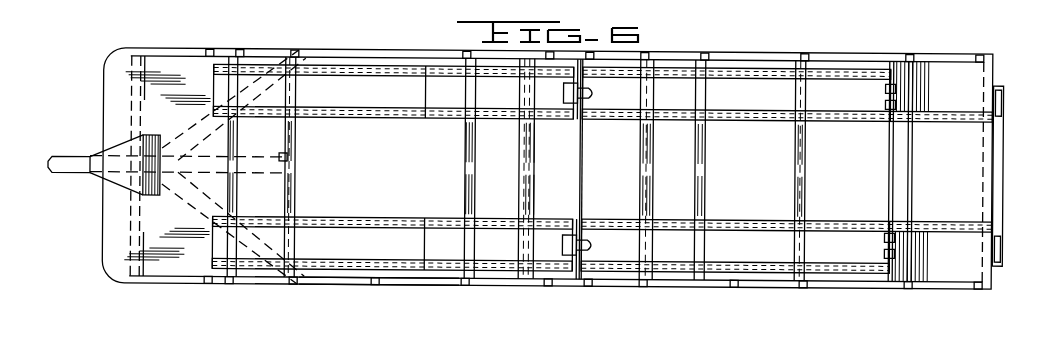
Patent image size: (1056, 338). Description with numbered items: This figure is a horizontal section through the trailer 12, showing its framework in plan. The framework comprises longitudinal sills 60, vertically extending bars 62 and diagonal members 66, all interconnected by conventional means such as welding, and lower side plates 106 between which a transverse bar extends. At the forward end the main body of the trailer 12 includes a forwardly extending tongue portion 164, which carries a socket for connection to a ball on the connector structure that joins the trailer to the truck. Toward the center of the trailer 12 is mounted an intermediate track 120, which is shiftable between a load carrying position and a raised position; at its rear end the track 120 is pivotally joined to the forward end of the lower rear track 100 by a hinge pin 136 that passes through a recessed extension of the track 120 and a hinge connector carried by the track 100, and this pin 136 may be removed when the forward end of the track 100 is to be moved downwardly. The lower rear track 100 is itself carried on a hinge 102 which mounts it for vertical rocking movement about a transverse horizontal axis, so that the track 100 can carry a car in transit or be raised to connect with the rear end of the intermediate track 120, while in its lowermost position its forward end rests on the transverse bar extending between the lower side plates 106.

The trailer 12 is at (490, 293).
The sills 60 is at (355, 280).
The vertically extending bars 62 is at (230, 284).
The diagonal members 66 is at (380, 284).
The lower rear track 100 is at (778, 97).
The hinge 102 is at (883, 87).
The lower side plates 106 is at (588, 277).
The intermediate track 120 is at (408, 97).
The hinge pin 136 is at (575, 101).
The tongue portion 164 is at (68, 163).